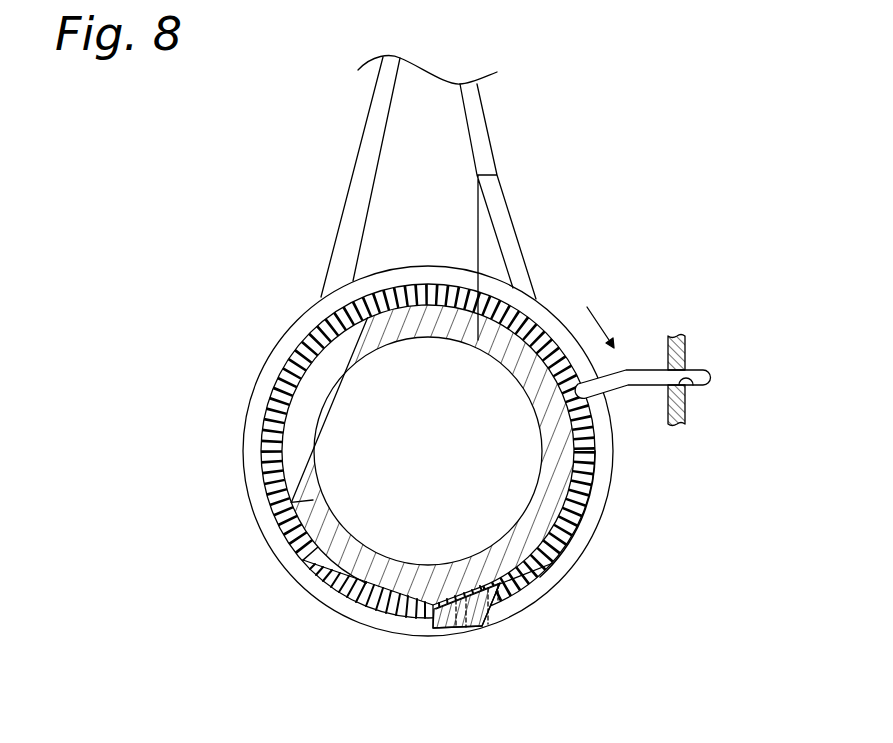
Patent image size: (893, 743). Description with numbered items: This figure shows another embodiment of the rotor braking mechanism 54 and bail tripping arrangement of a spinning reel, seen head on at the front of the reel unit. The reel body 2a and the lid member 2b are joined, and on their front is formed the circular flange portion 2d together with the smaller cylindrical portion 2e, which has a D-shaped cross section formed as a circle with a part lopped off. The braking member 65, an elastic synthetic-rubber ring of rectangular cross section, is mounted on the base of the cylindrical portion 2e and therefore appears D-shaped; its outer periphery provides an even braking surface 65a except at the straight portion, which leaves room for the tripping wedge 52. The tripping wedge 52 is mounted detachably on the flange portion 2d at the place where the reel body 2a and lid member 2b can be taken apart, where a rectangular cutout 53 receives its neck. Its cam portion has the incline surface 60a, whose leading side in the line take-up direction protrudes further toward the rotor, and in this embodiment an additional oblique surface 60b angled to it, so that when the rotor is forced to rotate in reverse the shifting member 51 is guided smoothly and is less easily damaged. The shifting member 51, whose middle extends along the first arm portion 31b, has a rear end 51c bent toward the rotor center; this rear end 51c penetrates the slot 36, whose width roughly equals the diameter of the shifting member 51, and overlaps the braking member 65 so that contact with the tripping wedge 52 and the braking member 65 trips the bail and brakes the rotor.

The reel body 2a is at (336, 240).
The lid member 2b is at (518, 243).
The flange portion 2d is at (327, 594).
The cylindrical portion 2e is at (273, 503).
The shifting member 51 is at (705, 368).
The rear end of the shifting member 51c is at (627, 369).
The tripping wedge 52 is at (542, 572).
The rectangular cutout 53 is at (480, 630).
The rotor braking mechanism 54 is at (617, 448).
The incline surface 60a is at (517, 594).
The oblique surface 60b is at (443, 623).
The braking member 65 is at (267, 413).
The braking surface 65a is at (590, 492).
The first arm portion 31b is at (690, 422).
The slot 36 is at (688, 387).